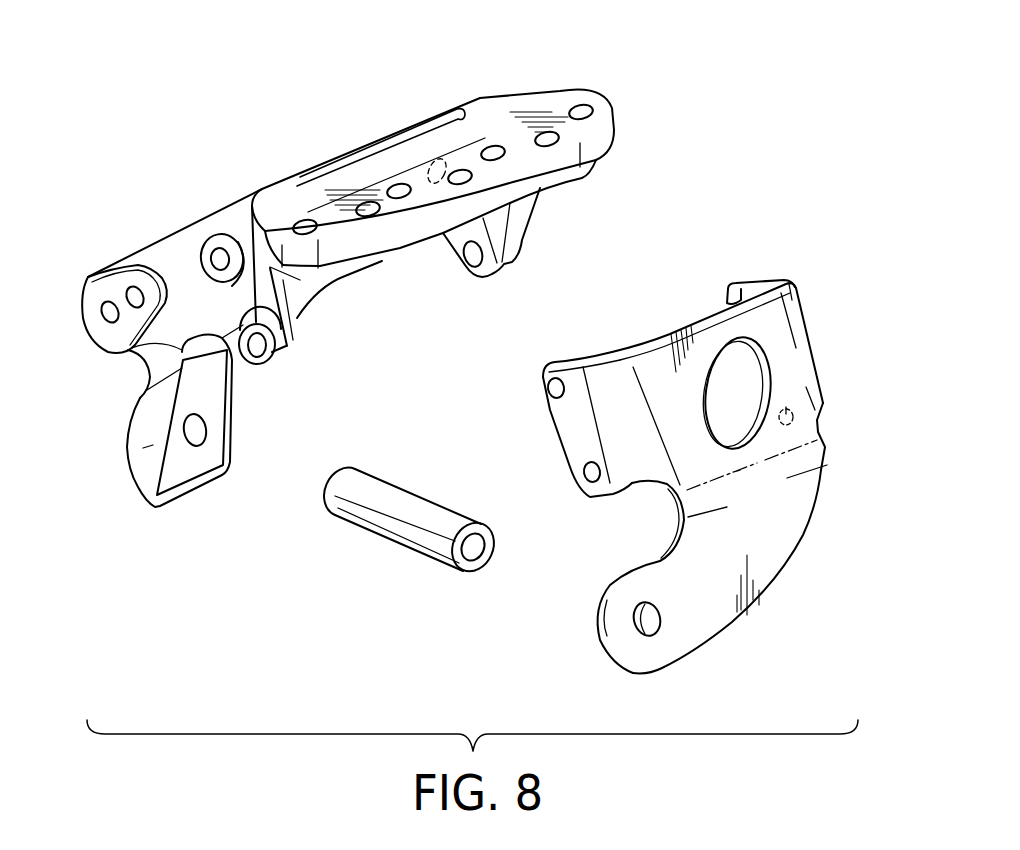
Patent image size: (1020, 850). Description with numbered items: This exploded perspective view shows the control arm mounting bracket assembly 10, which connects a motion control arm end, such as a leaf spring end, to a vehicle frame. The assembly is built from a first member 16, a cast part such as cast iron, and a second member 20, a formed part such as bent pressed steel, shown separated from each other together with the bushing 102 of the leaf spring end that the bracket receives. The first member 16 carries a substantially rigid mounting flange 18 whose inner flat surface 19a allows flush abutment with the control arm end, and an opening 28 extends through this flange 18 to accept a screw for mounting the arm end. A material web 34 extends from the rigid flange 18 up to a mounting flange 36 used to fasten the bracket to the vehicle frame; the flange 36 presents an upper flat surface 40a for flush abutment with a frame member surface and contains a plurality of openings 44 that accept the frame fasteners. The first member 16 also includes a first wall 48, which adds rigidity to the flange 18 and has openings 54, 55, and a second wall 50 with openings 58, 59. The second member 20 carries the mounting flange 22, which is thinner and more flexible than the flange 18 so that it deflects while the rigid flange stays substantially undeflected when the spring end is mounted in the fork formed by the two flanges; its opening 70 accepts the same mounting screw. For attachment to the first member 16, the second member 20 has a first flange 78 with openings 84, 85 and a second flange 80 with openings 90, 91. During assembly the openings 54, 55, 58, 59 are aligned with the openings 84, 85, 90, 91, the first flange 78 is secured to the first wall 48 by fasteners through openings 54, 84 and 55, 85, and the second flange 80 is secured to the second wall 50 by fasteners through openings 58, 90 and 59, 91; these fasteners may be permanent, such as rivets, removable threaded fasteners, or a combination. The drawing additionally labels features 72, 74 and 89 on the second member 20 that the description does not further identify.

The bracket assembly 10 is at (466, 338).
The first member 16 is at (236, 214).
The mounting flange 18 is at (197, 468).
The inner flat surface 19a is at (218, 440).
The second member 20 is at (773, 332).
The mounting flange 22 is at (694, 630).
The opening 28 is at (188, 428).
The material web 34 is at (246, 376).
The mounting flange 36 is at (578, 100).
The upper flat surface 40a is at (460, 113).
The openings 44 is at (306, 223).
The first wall 48 is at (170, 270).
The second wall 50 is at (487, 270).
The opening 54 is at (292, 350).
The opening 55 is at (218, 259).
The opening 58 is at (472, 258).
The opening 59 is at (428, 160).
The opening 70 is at (638, 614).
The notch 72 is at (776, 443).
The bend 74 is at (690, 506).
The first flange 78 is at (574, 434).
The second flange 80 is at (758, 282).
The opening 84 is at (588, 473).
The opening 85 is at (548, 391).
The corner 89 is at (791, 283).
The opening 90 is at (788, 405).
The opening 91 is at (727, 301).
The bushing 102 is at (373, 538).